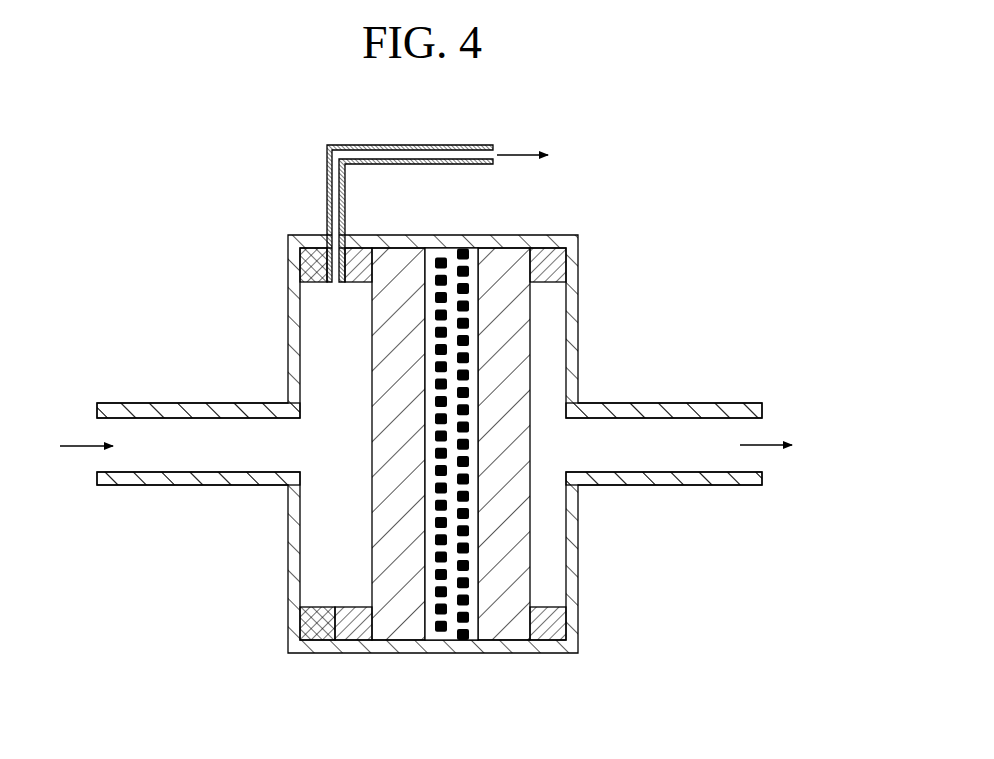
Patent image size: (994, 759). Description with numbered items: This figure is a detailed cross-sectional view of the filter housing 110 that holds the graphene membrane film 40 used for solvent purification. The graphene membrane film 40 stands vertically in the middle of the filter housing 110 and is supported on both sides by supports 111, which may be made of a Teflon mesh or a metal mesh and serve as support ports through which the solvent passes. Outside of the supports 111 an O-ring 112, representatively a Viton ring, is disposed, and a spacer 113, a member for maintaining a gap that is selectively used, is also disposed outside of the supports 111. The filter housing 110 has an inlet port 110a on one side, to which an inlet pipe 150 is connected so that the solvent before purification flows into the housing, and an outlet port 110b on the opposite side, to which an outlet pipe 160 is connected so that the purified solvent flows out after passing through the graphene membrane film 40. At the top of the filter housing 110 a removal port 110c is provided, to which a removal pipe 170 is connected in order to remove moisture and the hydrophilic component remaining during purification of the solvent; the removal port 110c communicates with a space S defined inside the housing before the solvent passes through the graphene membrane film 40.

The filter housing 110 is at (547, 234).
The inlet port 110a is at (293, 443).
The outlet port 110b is at (572, 443).
The removal port 110c is at (330, 236).
The supports 111 is at (403, 622).
The O-ring 112 is at (352, 627).
The spacer 113 is at (316, 627).
The graphene membrane film 40 is at (453, 632).
The inlet pipe 150 is at (133, 403).
The outlet pipe 160 is at (695, 403).
The removal pipe 170 is at (327, 178).
The space S is at (353, 378).